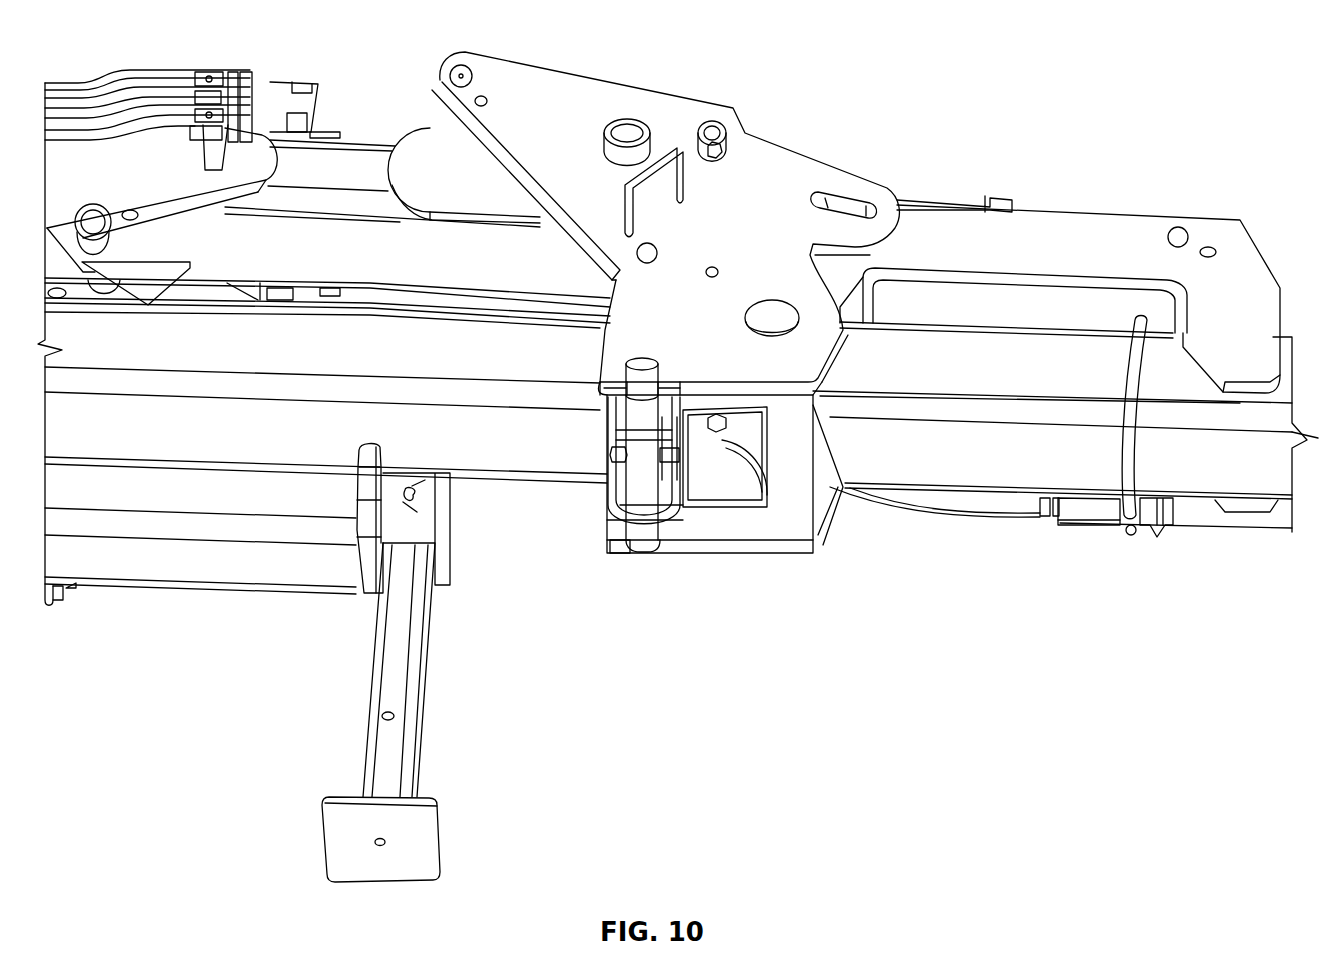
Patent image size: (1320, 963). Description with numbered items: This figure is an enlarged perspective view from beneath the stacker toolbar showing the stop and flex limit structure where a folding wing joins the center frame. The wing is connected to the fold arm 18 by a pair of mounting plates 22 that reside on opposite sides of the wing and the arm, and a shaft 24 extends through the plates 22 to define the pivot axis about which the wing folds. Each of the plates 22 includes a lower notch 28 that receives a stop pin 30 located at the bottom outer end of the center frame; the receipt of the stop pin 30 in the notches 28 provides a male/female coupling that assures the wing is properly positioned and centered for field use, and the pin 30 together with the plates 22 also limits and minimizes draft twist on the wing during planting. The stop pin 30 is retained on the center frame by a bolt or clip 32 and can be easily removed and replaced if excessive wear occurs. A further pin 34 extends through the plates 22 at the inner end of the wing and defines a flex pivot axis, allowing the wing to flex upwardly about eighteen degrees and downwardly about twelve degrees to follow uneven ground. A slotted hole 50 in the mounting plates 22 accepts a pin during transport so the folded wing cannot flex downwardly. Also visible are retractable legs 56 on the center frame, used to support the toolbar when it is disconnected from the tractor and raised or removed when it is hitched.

The fold arm 18 is at (314, 221).
The mounting plates 22 is at (520, 90).
The shaft 24 is at (630, 118).
The lower notch 28 is at (662, 382).
The stop pin 30 is at (640, 365).
The bolt or clip 32 is at (675, 455).
The pin 34 is at (767, 300).
The slotted hole 50 is at (867, 200).
The retractable legs 56 is at (420, 647).